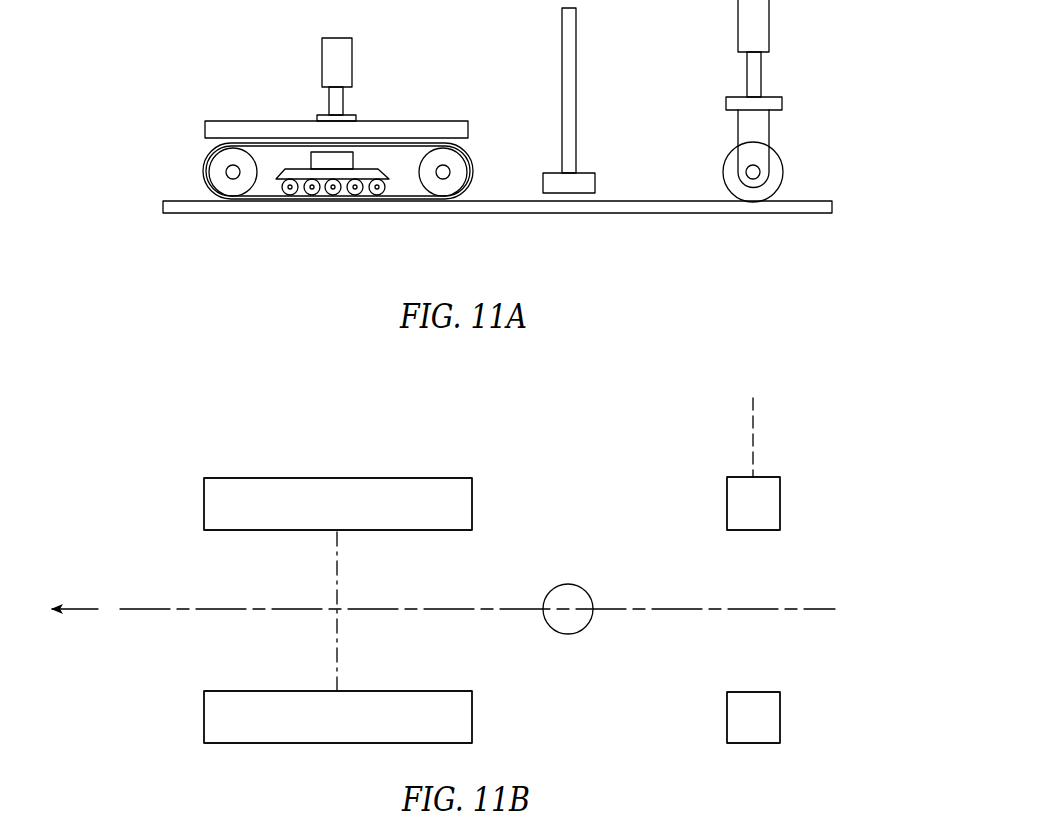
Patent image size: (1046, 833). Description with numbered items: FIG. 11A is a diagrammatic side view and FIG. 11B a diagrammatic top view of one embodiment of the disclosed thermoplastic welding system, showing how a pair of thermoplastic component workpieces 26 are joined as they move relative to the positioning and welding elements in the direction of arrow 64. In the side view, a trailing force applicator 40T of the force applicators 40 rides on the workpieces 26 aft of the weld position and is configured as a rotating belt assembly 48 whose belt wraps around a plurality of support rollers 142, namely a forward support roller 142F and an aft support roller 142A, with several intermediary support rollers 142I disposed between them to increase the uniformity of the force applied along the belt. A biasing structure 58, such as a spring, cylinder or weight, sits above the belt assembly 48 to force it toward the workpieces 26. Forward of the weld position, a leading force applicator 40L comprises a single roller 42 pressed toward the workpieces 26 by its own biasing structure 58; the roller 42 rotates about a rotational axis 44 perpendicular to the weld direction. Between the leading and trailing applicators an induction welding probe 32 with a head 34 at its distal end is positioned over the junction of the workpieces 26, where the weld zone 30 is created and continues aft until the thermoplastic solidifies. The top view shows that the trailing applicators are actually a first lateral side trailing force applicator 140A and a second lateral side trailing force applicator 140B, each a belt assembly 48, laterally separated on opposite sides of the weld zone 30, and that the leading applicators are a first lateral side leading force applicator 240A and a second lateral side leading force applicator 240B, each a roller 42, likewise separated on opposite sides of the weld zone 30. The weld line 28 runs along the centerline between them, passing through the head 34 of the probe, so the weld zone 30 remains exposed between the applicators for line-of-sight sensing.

In FIG. 11A, the thermoplastic components 26 is at (778, 207).
In FIG. 11B, the weld line 28 is at (130, 611).
In FIG. 11A, the weld zone 30 is at (603, 227).
In FIG. 11A, the induction welding probe 32 is at (592, 103).
In FIG. 11A, the head 34 is at (598, 183).
In FIG. 11B, the head 34 is at (570, 625).
In FIG. 11A, the force applicator 40 is at (301, 144).
In FIG. 11B, the force applicator 40 is at (257, 613).
In FIG. 11A, the trailing force applicator 40T is at (255, 75).
In FIG. 11B, the trailing force applicator 40T is at (182, 491).
In FIG. 11A, the leading force applicator 40L is at (790, 40).
In FIG. 11B, the leading force applicator 40L is at (780, 487).
In FIG. 11A, the roller 42 is at (783, 172).
In FIG. 11B, the roller 42 is at (733, 507).
In FIG. 11B, the rotational axis 44 is at (338, 600).
In FIG. 11A, the rotating belt assembly 48 is at (183, 168).
In FIG. 11B, the rotating belt assembly 48 is at (458, 503).
In FIG. 11A, the biasing structure 58 is at (327, 45).
In FIG. 11B, the arrow 64 is at (80, 612).
In FIG. 11B, the first lateral side trailing force applicator 140A is at (182, 732).
In FIG. 11B, the second lateral side trailing force applicator 140B is at (174, 526).
In FIG. 11A, the support rollers 142 is at (323, 208).
In FIG. 11A, the aft support roller 142A is at (233, 178).
In FIG. 11A, the forward support roller 142F is at (443, 178).
In FIG. 11A, the intermediary support rollers 142I is at (292, 195).
In FIG. 11B, the first lateral side leading force applicator 240A is at (805, 719).
In FIG. 11B, the second lateral side leading force applicator 240B is at (795, 497).